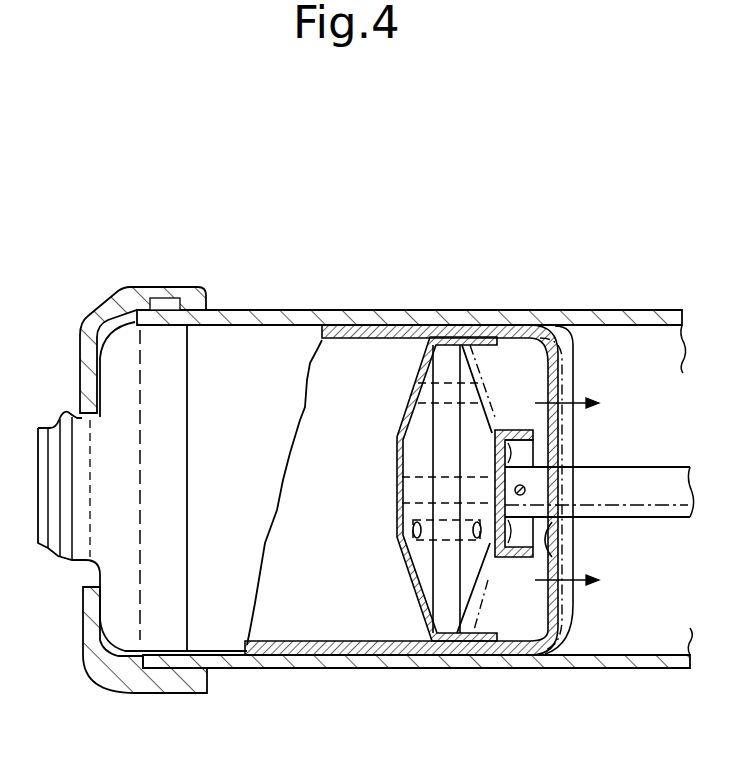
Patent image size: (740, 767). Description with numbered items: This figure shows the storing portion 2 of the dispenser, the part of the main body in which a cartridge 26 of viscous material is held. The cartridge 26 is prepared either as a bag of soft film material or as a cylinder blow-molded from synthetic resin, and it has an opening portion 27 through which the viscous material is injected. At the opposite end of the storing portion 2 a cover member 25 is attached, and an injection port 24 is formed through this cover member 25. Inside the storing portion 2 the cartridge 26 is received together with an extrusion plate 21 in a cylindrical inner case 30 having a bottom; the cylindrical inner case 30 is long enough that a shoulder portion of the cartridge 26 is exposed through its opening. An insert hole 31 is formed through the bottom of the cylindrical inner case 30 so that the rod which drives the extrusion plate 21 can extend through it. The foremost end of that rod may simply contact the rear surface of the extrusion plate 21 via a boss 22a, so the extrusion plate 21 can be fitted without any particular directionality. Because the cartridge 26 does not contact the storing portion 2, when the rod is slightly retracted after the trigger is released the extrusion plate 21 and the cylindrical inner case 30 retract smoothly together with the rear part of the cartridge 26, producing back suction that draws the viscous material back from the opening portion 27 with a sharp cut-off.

The storing portion 2 is at (511, 673).
The extrusion plate 21 is at (480, 410).
The boss 22a is at (517, 560).
The injection port 24 is at (92, 588).
The cover member 25 is at (107, 303).
The cartridge 26 is at (322, 603).
The opening portion 27 is at (38, 427).
The cylindrical inner case 30 is at (560, 593).
The insert hole 31 is at (567, 525).